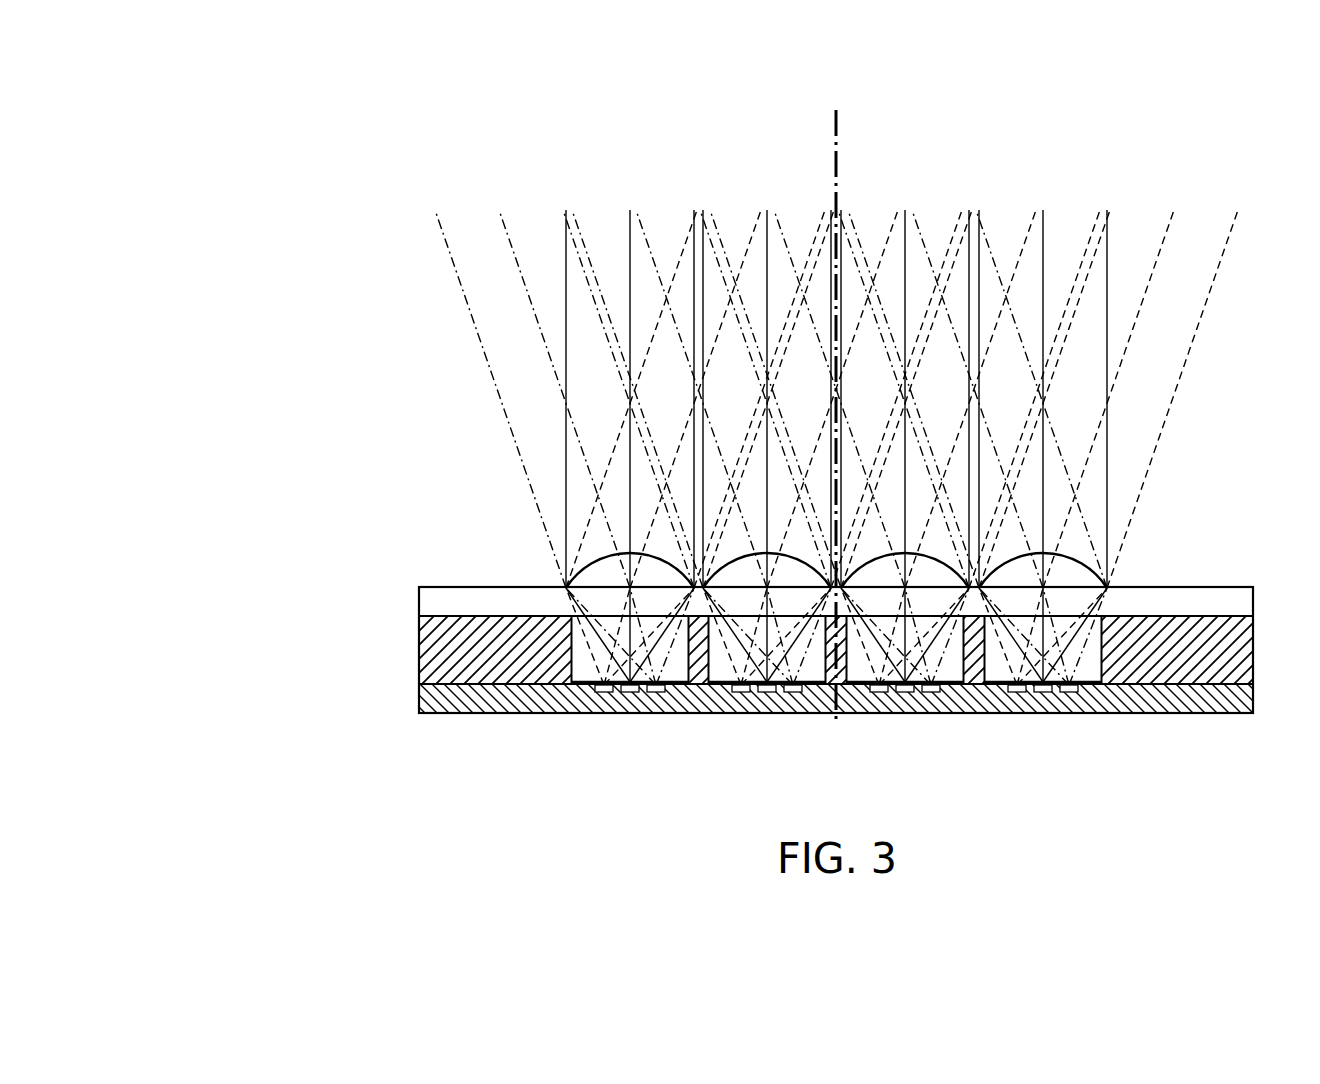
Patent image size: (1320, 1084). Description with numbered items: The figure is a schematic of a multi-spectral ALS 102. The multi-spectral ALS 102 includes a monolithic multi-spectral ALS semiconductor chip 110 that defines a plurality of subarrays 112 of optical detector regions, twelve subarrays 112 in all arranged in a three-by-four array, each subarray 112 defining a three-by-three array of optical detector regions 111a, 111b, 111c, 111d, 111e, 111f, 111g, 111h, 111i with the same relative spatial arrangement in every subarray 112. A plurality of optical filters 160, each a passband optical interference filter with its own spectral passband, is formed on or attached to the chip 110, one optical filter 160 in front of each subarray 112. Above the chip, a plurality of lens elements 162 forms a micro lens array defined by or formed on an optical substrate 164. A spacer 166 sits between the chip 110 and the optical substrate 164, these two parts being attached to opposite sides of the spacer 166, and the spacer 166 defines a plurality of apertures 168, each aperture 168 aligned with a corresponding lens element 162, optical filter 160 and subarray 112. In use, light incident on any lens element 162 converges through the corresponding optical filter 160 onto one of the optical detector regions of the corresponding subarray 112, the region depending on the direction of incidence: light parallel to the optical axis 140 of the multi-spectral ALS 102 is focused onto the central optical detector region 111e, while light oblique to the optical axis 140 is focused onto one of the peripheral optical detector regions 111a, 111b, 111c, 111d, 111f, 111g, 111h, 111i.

The multi-spectral ALS 102 is at (270, 768).
The monolithic multi-spectral ALS semiconductor chip 110 is at (419, 698).
The optical detector region 111a is at (597, 713).
The optical detector region 111b is at (627, 713).
The optical detector region 111c is at (658, 713).
The optical detector region 111d is at (596, 742).
The central optical detector region 111e is at (620, 763).
The optical detector region 111f is at (657, 780).
The optical detector region 111g is at (698, 742).
The optical detector region 111h is at (722, 763).
The optical detector region 111i is at (756, 780).
The subarray of optical detector regions 112 is at (362, 773).
The optical axis 140 is at (838, 122).
The optical filter 160 is at (578, 695).
The lens element 162 is at (597, 578).
The optical substrate 164 is at (419, 598).
The spacer 166 is at (419, 652).
The aperture 168 is at (582, 663).